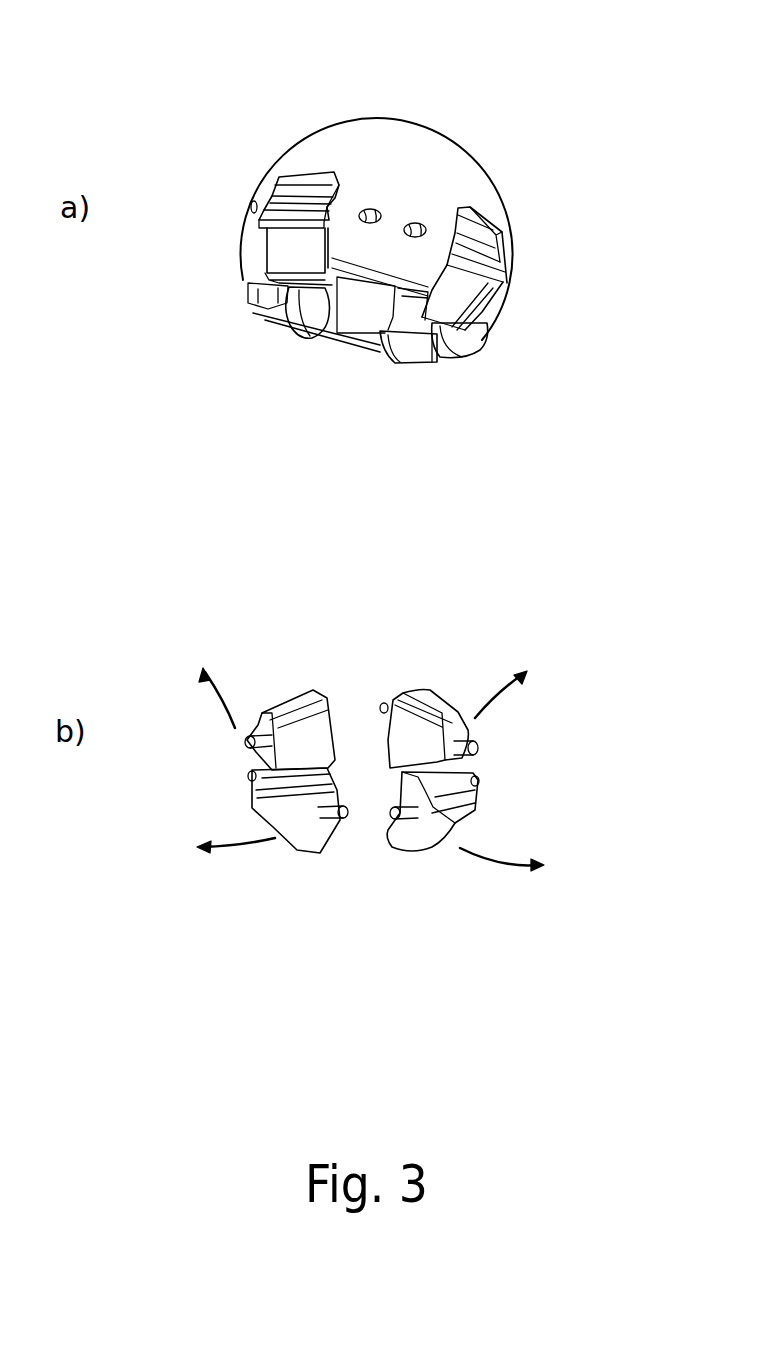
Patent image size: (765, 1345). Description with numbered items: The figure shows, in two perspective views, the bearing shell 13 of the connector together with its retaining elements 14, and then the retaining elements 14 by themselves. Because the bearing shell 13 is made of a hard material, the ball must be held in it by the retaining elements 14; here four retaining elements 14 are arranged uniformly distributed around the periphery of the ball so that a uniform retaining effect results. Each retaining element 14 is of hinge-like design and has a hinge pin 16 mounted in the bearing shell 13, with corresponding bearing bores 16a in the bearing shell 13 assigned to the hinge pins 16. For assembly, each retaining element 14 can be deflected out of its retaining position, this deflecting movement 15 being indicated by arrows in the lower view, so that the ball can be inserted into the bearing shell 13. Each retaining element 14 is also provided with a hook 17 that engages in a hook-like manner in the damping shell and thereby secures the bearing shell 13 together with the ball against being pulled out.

The bearing shell 13 is at (457, 162).
The retaining element 14 is at (240, 282).
The deflecting movement 15 is at (213, 712).
The hinge pin 16 is at (250, 777).
The bearing bore 16a is at (416, 222).
The hook 17 is at (290, 248).